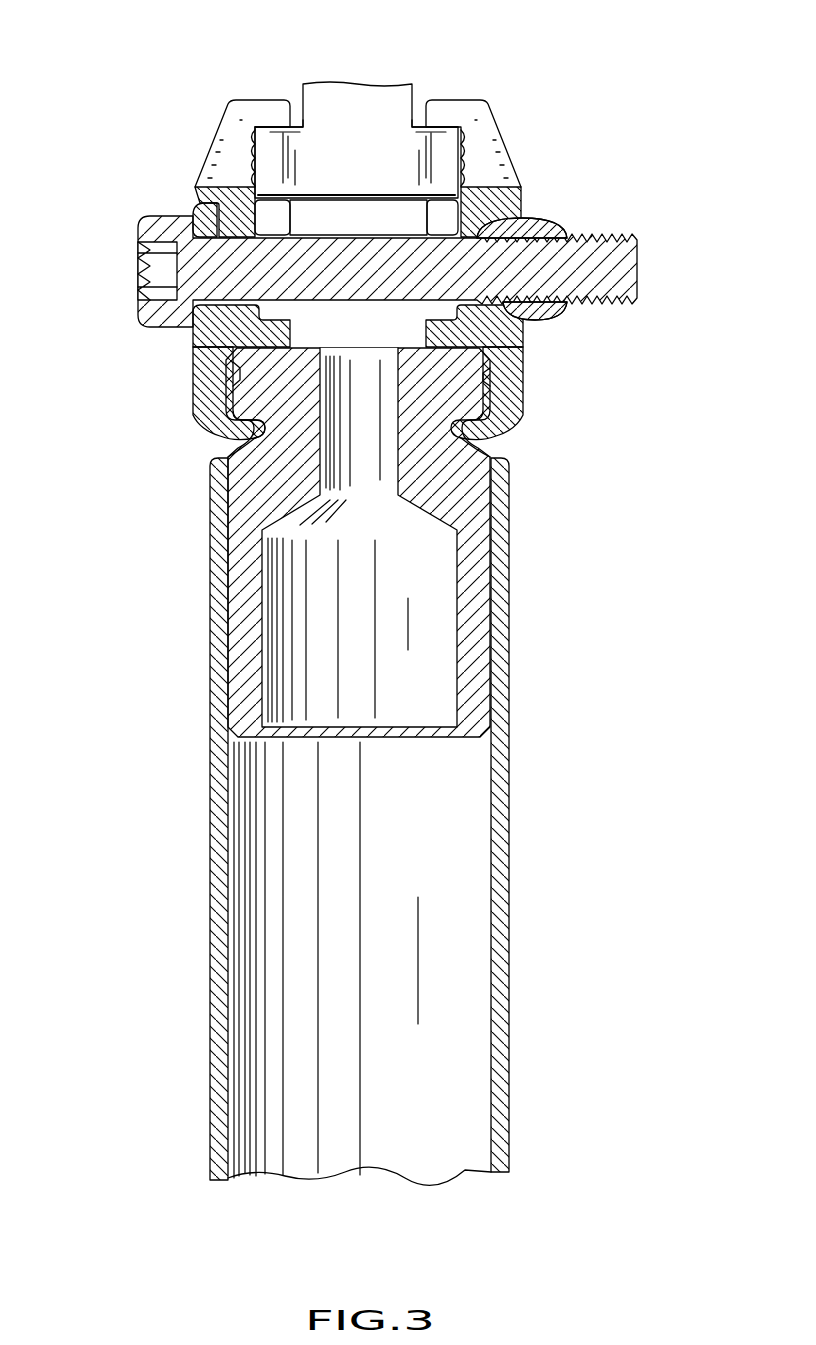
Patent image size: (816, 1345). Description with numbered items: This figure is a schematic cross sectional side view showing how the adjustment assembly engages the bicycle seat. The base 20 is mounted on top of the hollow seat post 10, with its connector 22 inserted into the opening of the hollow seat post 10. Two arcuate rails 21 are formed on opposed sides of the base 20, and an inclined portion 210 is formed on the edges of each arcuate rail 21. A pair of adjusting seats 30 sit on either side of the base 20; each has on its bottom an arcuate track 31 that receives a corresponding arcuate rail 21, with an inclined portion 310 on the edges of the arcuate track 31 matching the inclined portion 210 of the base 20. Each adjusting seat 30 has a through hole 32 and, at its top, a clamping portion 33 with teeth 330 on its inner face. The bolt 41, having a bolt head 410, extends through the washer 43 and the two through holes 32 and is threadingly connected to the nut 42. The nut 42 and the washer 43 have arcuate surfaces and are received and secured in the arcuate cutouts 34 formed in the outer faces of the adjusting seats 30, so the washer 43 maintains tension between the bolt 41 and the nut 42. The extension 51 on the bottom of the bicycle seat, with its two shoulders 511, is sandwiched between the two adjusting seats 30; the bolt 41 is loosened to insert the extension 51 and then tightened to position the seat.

The hollow seat post 10 is at (210, 818).
The base 20 is at (274, 542).
The arcuate rail 21 is at (243, 387).
The connector 22 is at (245, 600).
The inclined portion 210 is at (149, 385).
The inclined portion 310 is at (237, 365).
The adjusting seat 30 is at (374, 257).
The arcuate track 31 is at (492, 384).
The through hole 32 is at (497, 240).
The clamping portion 33 is at (320, 147).
The teeth 330 is at (255, 132).
The arcuate cutout 34 is at (203, 223).
The bolt 41 is at (342, 268).
The bolt head 410 is at (153, 229).
The nut 42 is at (550, 225).
The washer 43 is at (196, 332).
The extension 51 is at (360, 125).
The shoulder 511 is at (278, 128).